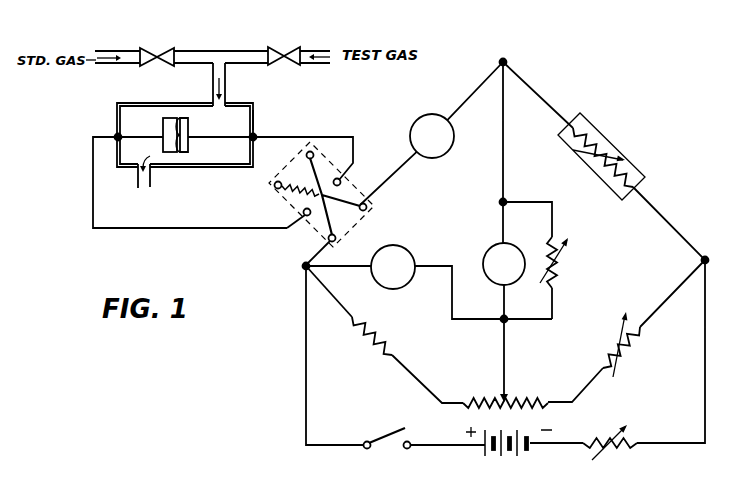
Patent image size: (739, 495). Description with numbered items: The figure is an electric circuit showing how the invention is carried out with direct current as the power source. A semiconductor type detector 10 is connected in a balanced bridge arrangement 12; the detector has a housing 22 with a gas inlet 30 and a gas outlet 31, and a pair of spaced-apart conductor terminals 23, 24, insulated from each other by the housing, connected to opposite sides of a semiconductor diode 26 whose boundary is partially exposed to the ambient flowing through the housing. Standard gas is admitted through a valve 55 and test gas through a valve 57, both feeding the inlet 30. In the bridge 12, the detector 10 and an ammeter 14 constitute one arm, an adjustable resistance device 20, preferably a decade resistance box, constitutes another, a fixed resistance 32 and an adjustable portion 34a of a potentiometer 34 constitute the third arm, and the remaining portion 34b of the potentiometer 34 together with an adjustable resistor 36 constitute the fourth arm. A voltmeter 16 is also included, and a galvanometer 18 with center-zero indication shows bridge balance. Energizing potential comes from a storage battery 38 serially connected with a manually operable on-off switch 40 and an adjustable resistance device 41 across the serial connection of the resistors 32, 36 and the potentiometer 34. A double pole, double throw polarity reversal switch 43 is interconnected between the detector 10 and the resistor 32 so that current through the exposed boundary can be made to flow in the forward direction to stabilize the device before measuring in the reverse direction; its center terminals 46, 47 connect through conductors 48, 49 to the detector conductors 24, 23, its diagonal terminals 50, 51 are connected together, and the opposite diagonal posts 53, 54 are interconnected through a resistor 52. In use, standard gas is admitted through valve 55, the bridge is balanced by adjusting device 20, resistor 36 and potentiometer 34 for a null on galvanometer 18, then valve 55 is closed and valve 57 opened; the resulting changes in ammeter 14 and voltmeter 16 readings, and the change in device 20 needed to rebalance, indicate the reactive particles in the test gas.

The semiconductor type detector 10 is at (147, 103).
The balanced bridge arrangement 12 is at (541, 183).
The ammeter 14 is at (438, 114).
The voltmeter 16 is at (418, 237).
The galvanometer 18 is at (486, 255).
The adjustable resistance device 20 is at (636, 150).
The housing 22 is at (256, 118).
The conductor terminal 23 is at (242, 136).
The conductor terminal 24 is at (152, 136).
The semiconductor diode 26 is at (188, 137).
The gas inlet 30 is at (211, 76).
The gas outlet 31 is at (151, 181).
The fixed resistance 32 is at (363, 341).
The potentiometer 34 is at (508, 381).
The adjustable portion of the potentiometer resistance 34a is at (488, 397).
The remaining portion of the potentiometer resistance 34b is at (517, 388).
The adjustable resistor 36 is at (628, 344).
The storage battery 38 is at (492, 457).
The on-off switch 40 is at (390, 428).
The adjustable resistance device 41 is at (629, 428).
The polarity reversal switch 43 is at (278, 178).
The center terminal 46 is at (303, 211).
The center terminal 47 is at (340, 181).
The conductor 48 is at (92, 192).
The conductor 49 is at (306, 136).
The diagonal terminal 50 is at (313, 153).
The diagonal terminal 51 is at (328, 239).
The resistor 52 is at (276, 195).
The diagonal post 53 is at (274, 186).
The diagonal post 54 is at (366, 208).
The valve 55 is at (157, 47).
The valve 57 is at (284, 47).